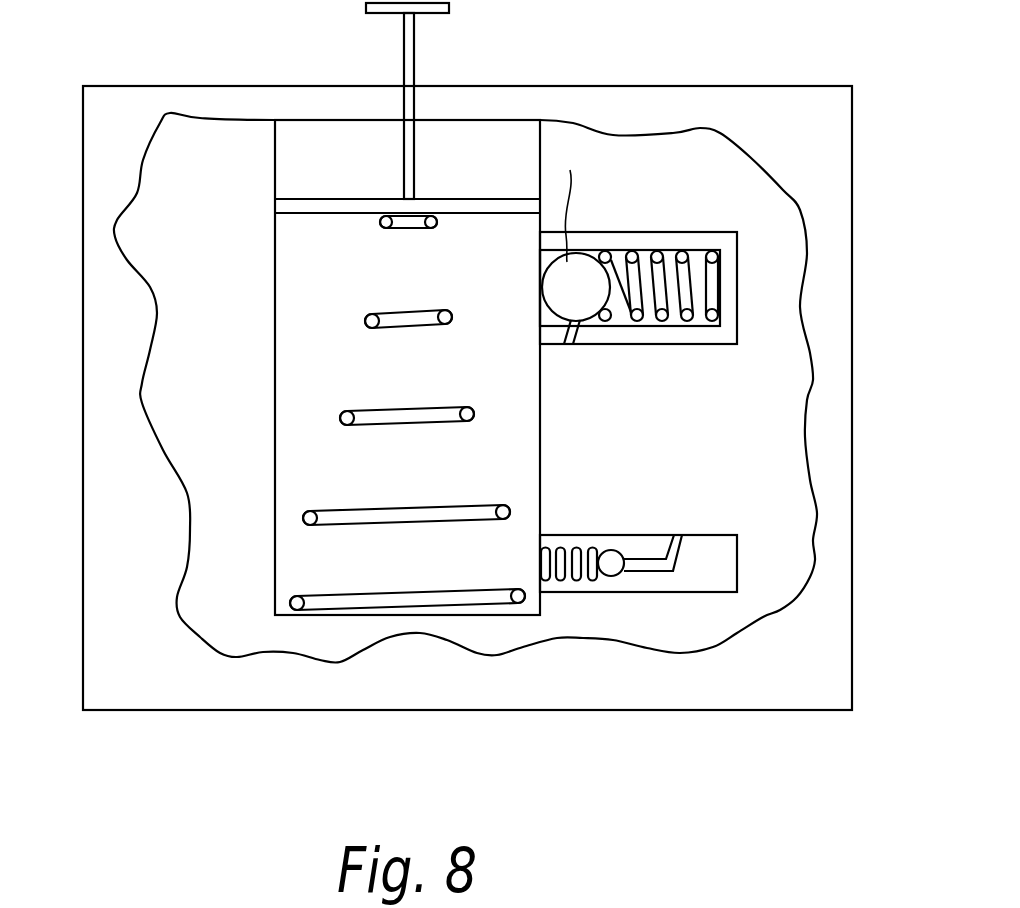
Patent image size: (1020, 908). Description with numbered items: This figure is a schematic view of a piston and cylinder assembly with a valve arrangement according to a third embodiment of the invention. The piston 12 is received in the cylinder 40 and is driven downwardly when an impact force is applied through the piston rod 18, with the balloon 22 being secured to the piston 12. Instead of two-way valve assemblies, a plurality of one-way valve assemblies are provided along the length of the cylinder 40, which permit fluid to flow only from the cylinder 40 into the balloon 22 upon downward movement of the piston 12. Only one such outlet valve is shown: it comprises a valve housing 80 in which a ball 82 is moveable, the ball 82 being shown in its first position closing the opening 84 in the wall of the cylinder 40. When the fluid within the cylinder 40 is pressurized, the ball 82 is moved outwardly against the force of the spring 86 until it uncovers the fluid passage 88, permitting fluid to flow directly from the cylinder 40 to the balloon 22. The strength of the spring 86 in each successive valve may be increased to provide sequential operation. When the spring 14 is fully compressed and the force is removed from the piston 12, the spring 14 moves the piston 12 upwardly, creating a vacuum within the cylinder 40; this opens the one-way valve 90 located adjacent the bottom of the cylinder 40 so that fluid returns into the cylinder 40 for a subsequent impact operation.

The piston 12 is at (290, 207).
The spring 14 is at (333, 515).
The piston rod 18 is at (405, 52).
The balloon 22 is at (800, 208).
The cylinder 40 is at (275, 263).
The valve housing 80 is at (647, 238).
The ball 82 is at (570, 193).
The opening 84 is at (541, 307).
The spring 86 is at (683, 295).
The fluid passage 88 is at (572, 330).
The one-way valve 90 is at (611, 563).